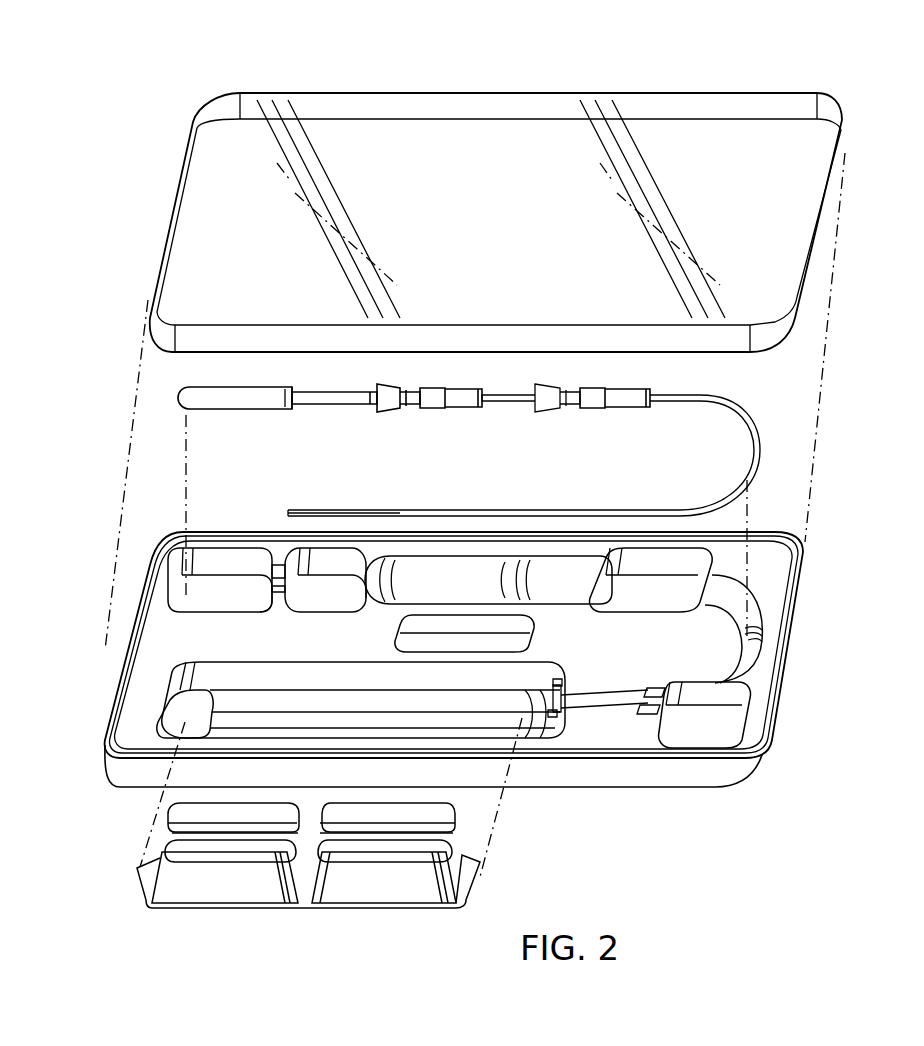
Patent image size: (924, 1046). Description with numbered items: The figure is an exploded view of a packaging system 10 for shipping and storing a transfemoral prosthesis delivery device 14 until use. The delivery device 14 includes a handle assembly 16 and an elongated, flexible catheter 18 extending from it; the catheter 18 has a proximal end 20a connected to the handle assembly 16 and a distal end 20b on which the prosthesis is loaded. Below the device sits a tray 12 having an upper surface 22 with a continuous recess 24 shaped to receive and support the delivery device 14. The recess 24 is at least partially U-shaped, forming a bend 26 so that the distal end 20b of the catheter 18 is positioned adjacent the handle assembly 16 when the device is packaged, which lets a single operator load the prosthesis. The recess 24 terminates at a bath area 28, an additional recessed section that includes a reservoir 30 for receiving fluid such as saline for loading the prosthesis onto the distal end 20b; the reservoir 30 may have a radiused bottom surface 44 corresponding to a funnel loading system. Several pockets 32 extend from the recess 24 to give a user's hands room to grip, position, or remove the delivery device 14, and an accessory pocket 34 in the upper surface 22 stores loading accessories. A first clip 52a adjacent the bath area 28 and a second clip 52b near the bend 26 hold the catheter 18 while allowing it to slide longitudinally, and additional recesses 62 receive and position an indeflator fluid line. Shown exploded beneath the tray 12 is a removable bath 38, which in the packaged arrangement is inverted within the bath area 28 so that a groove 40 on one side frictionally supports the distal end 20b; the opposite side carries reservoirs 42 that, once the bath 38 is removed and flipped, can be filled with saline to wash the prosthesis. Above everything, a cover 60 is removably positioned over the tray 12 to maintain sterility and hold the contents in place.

The packaging system 10 is at (232, 78).
The tray 12 is at (778, 510).
The delivery device 14 is at (484, 417).
The handle assembly 16 is at (346, 401).
The catheter 18 is at (748, 440).
The proximal end 20a is at (656, 383).
The distal end 20b is at (388, 506).
The upper surface 22 is at (762, 570).
The recess 24 is at (718, 570).
The bend 26 is at (752, 646).
The bath area 28 is at (530, 740).
The reservoir 30 is at (188, 710).
The pockets 32 is at (235, 556).
The accessory pockets 34 is at (412, 645).
The removable bath 38 is at (445, 818).
The groove 40 is at (400, 836).
The reservoirs 42 is at (217, 886).
The bottom surface 44 is at (250, 720).
The first clip 52a is at (566, 688).
The second clip 52b is at (658, 688).
The cover 60 is at (506, 93).
The additional recesses 62 is at (556, 683).